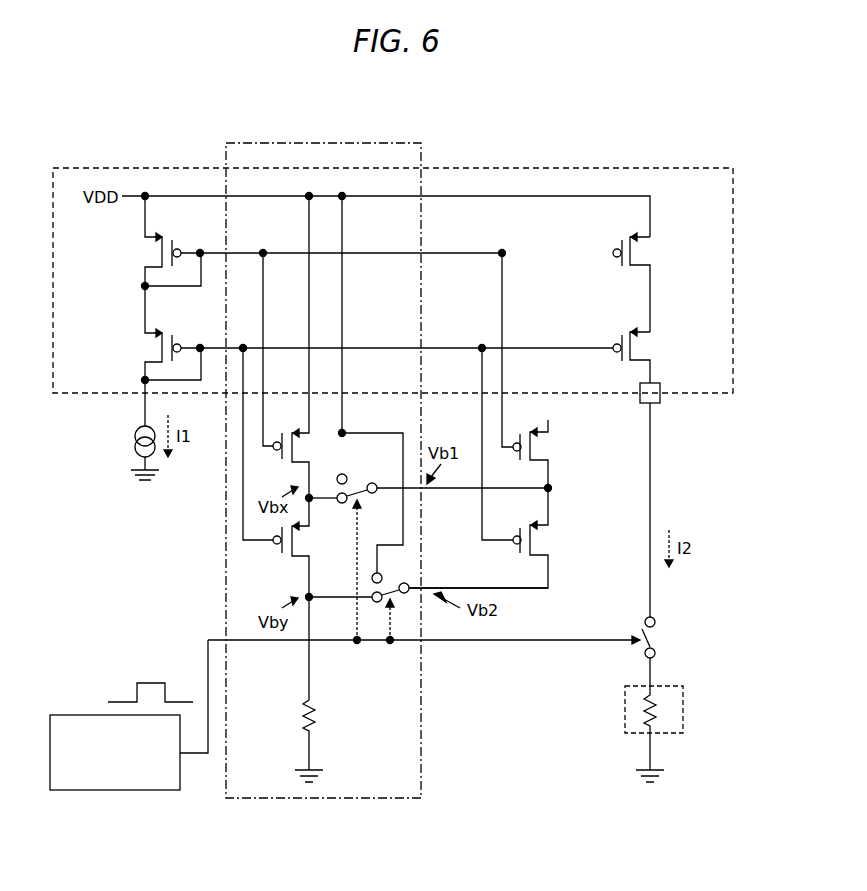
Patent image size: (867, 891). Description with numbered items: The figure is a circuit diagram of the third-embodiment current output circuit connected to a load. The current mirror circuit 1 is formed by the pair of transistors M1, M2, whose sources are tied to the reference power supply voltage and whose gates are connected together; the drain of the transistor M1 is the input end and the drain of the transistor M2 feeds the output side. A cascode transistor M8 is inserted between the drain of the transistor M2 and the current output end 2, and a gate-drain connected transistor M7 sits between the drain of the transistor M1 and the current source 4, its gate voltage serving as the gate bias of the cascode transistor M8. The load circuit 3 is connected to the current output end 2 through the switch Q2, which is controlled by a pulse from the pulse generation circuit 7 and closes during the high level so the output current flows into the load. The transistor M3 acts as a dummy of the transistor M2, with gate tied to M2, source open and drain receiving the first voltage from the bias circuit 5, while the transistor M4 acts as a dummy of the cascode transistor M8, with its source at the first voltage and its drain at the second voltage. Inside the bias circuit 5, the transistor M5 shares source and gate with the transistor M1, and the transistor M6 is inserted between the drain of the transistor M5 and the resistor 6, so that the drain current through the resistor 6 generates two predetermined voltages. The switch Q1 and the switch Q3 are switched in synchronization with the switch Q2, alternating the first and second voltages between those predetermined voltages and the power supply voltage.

The current mirror circuit 1 is at (578, 167).
The current output end 2 is at (660, 398).
The load circuit 3 is at (683, 710).
The current source 4 is at (133, 442).
The bias circuit 5 is at (421, 688).
The resistor 6 is at (316, 708).
The pulse generation circuit 7 is at (117, 790).
The transistor M1 is at (150, 251).
The transistor M2 is at (648, 249).
The transistor M3 is at (543, 450).
The transistor M4 is at (545, 540).
The transistor M5 is at (272, 456).
The transistor M6 is at (272, 553).
The transistor M7 is at (150, 347).
The cascode transistor M8 is at (650, 343).
The switch Q1 is at (350, 478).
The switch Q2 is at (660, 634).
The switch Q3 is at (382, 573).